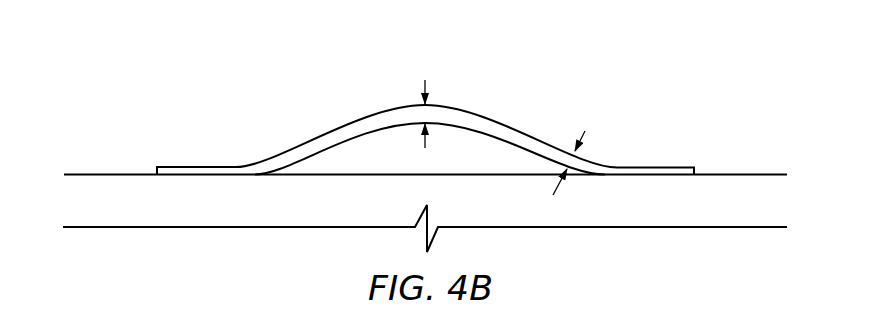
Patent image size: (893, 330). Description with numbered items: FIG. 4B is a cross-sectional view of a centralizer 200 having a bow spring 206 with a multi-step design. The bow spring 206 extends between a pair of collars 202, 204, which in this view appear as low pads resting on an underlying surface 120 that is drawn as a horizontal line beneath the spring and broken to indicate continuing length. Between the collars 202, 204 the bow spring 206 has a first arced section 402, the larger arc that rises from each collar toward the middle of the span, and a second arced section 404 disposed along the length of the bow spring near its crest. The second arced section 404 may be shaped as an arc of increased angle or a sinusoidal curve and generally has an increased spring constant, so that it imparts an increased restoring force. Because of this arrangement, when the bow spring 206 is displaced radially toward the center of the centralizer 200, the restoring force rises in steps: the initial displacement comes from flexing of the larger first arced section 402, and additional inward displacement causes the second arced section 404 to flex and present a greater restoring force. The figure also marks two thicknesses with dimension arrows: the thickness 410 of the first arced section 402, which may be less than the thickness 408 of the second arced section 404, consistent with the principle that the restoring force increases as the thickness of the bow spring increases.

The substrate 120 is at (719, 174).
The centralizer 200 is at (425, 145).
The collar 202 is at (634, 167).
The collar 204 is at (183, 167).
The bow spring 206 is at (481, 85).
The first arced section 402 is at (421, 128).
The second arced section 404 is at (370, 116).
The thickness of the second arced section 408 is at (426, 105).
The thickness of the first arced section 410 is at (578, 153).